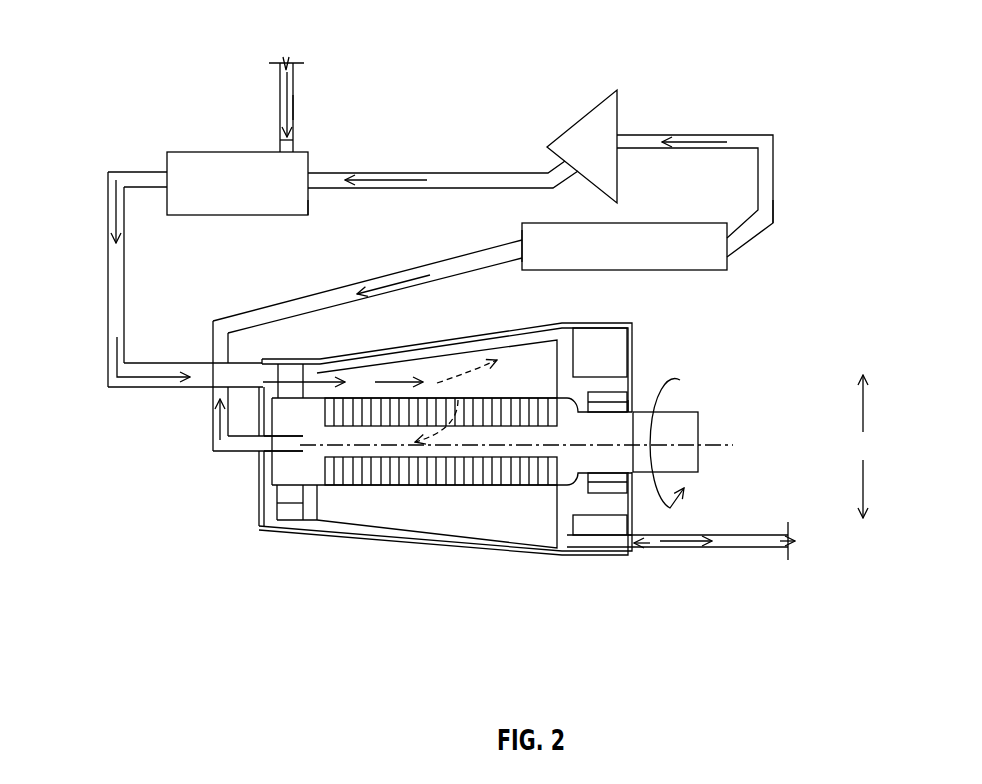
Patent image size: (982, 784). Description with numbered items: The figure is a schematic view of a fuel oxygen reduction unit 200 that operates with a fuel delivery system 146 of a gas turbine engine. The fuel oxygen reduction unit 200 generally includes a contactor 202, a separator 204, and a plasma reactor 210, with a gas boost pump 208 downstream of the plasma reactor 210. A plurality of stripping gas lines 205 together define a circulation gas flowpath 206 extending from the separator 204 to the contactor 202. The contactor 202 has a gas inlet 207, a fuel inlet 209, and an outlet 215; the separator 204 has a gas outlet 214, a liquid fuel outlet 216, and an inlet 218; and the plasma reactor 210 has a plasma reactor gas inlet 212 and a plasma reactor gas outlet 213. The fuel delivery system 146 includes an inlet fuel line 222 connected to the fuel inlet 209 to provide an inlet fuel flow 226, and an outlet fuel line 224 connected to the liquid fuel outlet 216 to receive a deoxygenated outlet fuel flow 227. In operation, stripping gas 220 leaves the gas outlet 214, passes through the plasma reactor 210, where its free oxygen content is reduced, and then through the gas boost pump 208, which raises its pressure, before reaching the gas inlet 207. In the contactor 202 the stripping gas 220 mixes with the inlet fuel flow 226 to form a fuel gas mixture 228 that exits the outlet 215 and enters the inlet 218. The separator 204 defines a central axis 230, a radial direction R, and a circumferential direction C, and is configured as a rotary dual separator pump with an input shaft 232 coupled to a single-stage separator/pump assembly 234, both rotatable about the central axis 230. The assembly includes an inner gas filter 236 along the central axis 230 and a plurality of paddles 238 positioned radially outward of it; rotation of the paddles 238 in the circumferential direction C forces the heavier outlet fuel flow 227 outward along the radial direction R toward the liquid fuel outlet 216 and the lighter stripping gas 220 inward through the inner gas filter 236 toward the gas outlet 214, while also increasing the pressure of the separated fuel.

The fuel delivery system 146 is at (335, 72).
The fuel oxygen reduction unit 200 is at (804, 77).
The contactor 202 is at (198, 152).
The separator 204 is at (420, 570).
The stripping gas line 205 is at (450, 173).
The circulation gas flowpath 206 is at (497, 172).
The gas inlet 207 is at (310, 200).
The gas boost pump 208 is at (593, 107).
The fuel inlet 209 is at (279, 148).
The plasma reactor 210 is at (672, 270).
The plasma reactor gas inlet 212 is at (522, 232).
The plasma reactor gas outlet 213 is at (773, 227).
The gas outlet 214 is at (261, 447).
The outlet 215 is at (165, 165).
The liquid fuel outlet 216 is at (638, 547).
The inlet 218 is at (250, 376).
The stripping gas 220 is at (383, 173).
The inlet fuel line 222 is at (294, 108).
The outlet fuel line 224 is at (733, 535).
The inlet fuel flow 226 is at (282, 108).
The outlet fuel flow 227 is at (690, 542).
The fuel gas mixture 228 is at (113, 213).
The central axis 230 is at (686, 445).
The input shaft 232 is at (637, 420).
The single-stage separator/pump assembly 234 is at (452, 510).
The inner gas filter 236 is at (387, 486).
The paddles 238 is at (463, 363).
The circumferential direction C is at (684, 392).
The radial direction R is at (864, 446).